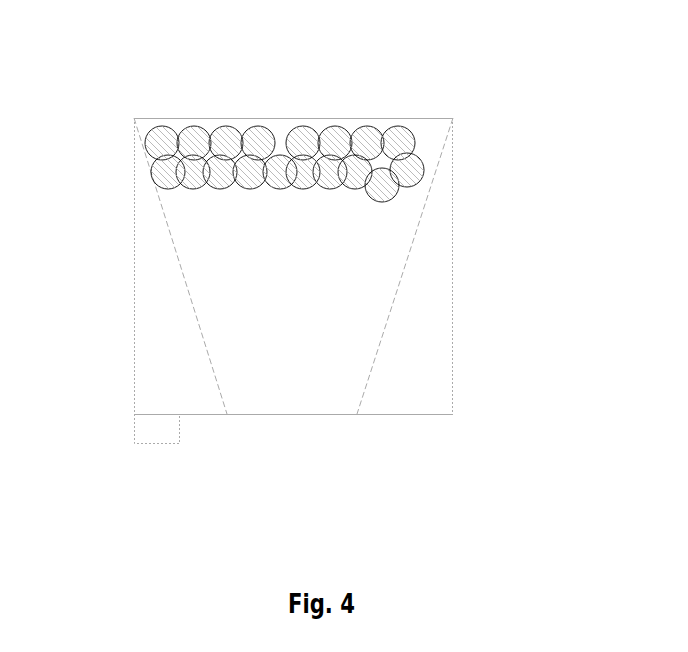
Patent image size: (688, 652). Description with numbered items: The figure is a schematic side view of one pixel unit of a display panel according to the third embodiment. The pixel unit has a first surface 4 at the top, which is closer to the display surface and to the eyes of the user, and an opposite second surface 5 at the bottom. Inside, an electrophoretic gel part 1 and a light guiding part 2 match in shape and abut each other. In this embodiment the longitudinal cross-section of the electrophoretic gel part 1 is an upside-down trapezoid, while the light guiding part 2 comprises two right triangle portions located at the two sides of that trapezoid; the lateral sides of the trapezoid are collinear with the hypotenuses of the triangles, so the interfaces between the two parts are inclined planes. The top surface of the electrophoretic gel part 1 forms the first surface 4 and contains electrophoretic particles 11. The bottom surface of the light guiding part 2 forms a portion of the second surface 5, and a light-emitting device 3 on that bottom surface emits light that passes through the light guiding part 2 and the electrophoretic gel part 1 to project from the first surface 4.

The electrophoretic gel part 1 is at (342, 248).
The light guiding part 2 is at (402, 362).
The light-emitting device 3 is at (152, 432).
The first surface 4 is at (261, 117).
The second surface 5 is at (313, 414).
The electrophoretic particles 11 is at (415, 182).